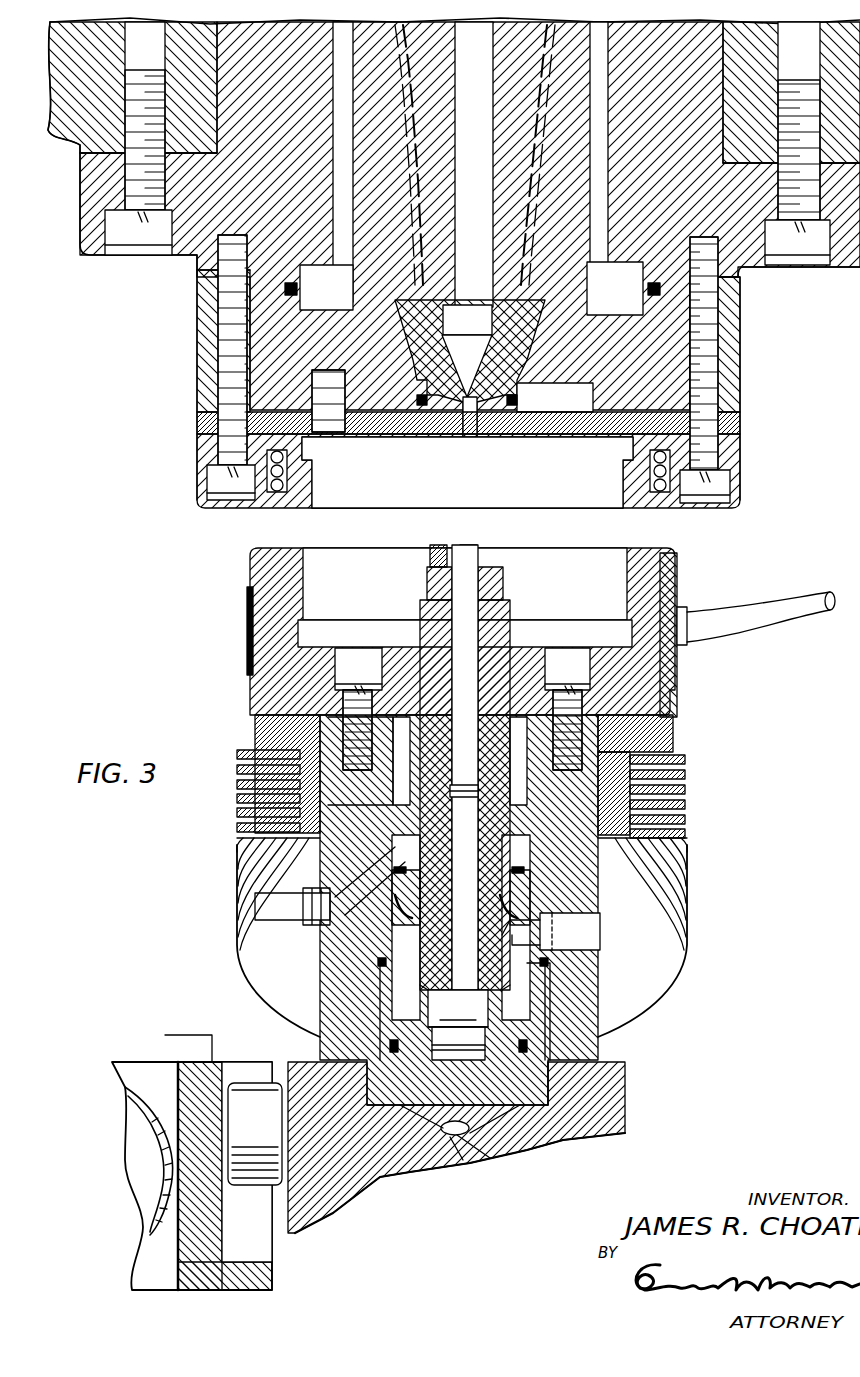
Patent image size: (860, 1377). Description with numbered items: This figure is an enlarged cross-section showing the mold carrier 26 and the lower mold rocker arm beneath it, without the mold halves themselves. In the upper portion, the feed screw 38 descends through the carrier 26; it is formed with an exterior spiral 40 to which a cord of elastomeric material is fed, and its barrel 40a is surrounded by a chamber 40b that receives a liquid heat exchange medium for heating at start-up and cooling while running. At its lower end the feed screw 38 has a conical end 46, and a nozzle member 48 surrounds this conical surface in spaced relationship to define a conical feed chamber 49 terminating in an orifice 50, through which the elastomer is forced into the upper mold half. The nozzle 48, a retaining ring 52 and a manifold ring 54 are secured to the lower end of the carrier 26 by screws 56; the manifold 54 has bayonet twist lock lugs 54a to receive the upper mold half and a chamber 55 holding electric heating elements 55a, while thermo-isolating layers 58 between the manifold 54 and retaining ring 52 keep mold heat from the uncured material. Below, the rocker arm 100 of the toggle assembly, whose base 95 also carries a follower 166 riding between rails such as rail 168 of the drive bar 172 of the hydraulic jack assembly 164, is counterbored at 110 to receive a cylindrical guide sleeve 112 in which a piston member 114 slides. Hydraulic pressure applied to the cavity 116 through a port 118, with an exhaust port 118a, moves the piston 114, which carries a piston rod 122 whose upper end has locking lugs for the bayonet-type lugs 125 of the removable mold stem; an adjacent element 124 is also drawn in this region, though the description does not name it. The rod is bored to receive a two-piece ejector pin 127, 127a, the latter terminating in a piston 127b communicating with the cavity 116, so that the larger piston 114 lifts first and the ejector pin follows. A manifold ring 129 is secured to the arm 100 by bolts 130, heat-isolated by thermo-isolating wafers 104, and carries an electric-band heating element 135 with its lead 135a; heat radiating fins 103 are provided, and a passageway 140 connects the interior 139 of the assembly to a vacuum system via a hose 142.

The carrier 26 is at (232, 85).
The feed screw 38 is at (502, 118).
The exterior spiral 40 is at (537, 95).
The barrel 40a is at (363, 118).
The chamber 40b is at (603, 80).
The conical end 46 is at (479, 368).
The nozzle member 48 is at (485, 450).
The conical feed chamber 49 is at (500, 362).
The orifice 50 is at (452, 468).
The retaining ring 52 is at (205, 313).
The manifold ring 54 is at (200, 463).
The bayonet twist lock lugs 54a is at (310, 492).
The chamber 55 is at (680, 470).
The electric heating elements 55a is at (277, 492).
The screws 56 is at (227, 385).
The thermo-isolating layers 58 is at (200, 422).
The base 95 is at (608, 1090).
The rocker arm 100 is at (597, 910).
The heat radiating fins 103 is at (685, 775).
The thermo-isolating wafers 104 is at (675, 733).
The counterbore 110 is at (550, 1033).
The cylindrical guide sleeve 112 is at (543, 1100).
The piston member 114 is at (517, 1033).
The cavity 116 is at (440, 1135).
The port 118 is at (480, 1157).
The exhaust port 118a is at (580, 940).
The piston rod 122 is at (515, 858).
The boss 124 is at (413, 740).
The bayonet-type lugs 125 is at (507, 768).
The ejector pin 127 is at (467, 570).
The ejector pin 127a is at (470, 832).
The piston 127b is at (462, 1080).
The manifold ring 129 is at (293, 567).
The bolts 130 is at (358, 667).
The electric-band heating element 135 is at (250, 605).
The lead 135a is at (702, 627).
The interior 139 is at (690, 868).
The passageway 140 is at (350, 897).
The hose 142 is at (277, 912).
The hydraulic jack assembly 164 is at (141, 1048).
The follower 166 is at (255, 1100).
The rail 168 is at (255, 1233).
The drive bar 172 is at (199, 1062).